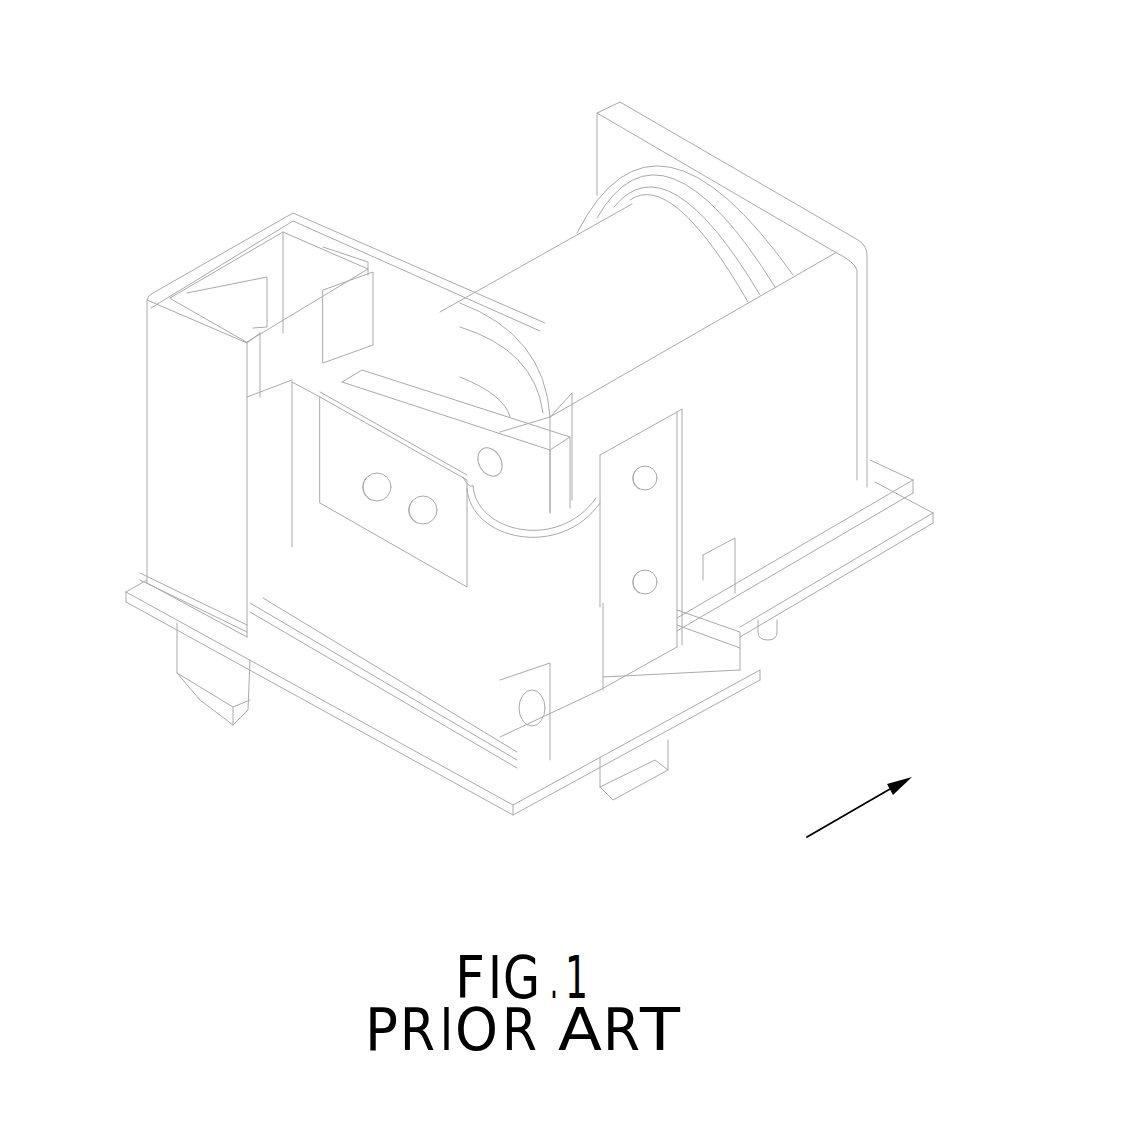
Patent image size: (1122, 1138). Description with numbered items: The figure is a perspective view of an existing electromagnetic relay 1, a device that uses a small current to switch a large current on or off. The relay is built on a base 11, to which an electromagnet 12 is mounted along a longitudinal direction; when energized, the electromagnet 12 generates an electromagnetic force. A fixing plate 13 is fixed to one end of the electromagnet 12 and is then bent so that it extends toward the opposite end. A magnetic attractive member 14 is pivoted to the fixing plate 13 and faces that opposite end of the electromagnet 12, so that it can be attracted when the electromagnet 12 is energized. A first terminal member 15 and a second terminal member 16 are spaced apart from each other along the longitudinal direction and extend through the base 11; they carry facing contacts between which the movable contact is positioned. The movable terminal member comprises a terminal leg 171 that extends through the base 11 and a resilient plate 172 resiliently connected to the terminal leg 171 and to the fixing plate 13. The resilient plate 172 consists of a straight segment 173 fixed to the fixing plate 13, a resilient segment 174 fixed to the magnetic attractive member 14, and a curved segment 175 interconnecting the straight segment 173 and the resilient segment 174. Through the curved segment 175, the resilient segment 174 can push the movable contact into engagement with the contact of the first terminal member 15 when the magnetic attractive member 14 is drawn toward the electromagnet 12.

The electromagnetic relay 1 is at (767, 108).
The base 11 is at (887, 552).
The electromagnet 12 is at (533, 262).
The fixing plate 13 is at (785, 197).
The magnetic attractive member 14 is at (459, 388).
The first terminal member 15 is at (199, 310).
The second terminal member 16 is at (325, 248).
The terminal leg 171 is at (640, 777).
The resilient plate 172 is at (677, 493).
The straight segment 173 is at (658, 645).
The resilient segment 174 is at (340, 452).
The curved segment 175 is at (492, 617).